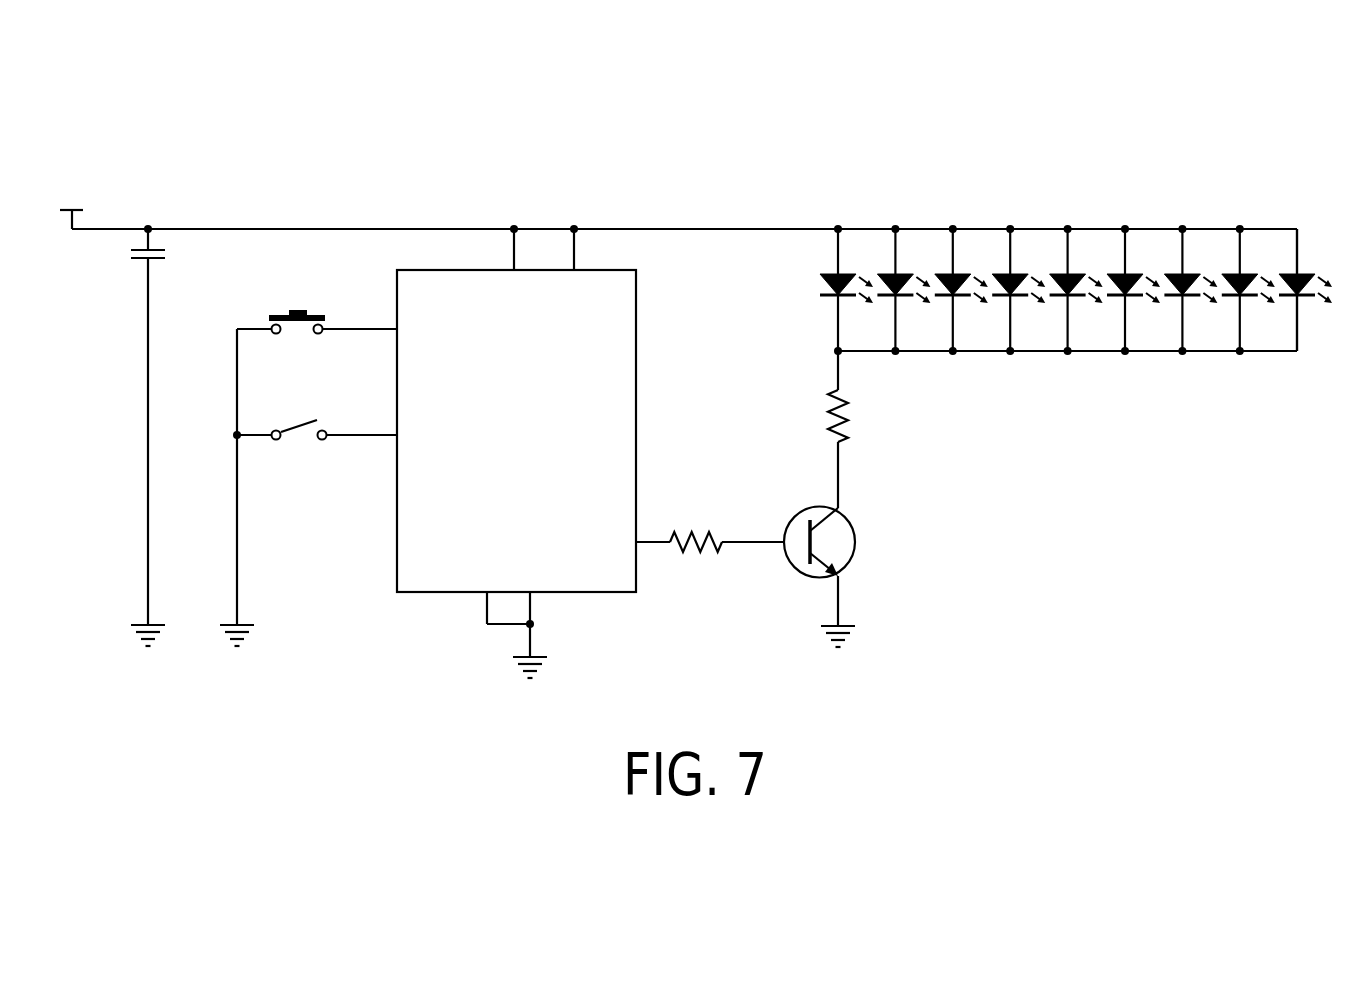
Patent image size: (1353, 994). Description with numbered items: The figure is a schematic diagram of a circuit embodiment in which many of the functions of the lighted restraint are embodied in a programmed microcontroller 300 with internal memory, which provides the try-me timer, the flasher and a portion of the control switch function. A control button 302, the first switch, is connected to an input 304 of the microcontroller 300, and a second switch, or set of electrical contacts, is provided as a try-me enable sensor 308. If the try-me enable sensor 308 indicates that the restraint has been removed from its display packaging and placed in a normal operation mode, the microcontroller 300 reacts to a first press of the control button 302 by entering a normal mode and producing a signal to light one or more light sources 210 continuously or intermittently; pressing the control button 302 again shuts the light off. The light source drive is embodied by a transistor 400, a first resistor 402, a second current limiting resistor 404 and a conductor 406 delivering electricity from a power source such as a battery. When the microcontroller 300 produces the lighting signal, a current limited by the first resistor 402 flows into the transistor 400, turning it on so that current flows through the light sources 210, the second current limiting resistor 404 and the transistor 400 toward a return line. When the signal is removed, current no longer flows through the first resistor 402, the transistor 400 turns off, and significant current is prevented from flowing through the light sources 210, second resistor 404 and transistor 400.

The light sources 210 is at (1162, 366).
The microcontroller 300 is at (516, 453).
The control button 302 is at (324, 306).
The input 304 is at (362, 328).
The try-me enable sensor 308 is at (307, 446).
The transistor 400 is at (855, 549).
The first resistor 402 is at (694, 549).
The second current limiting resistor 404 is at (843, 410).
The conductor 406 is at (780, 229).